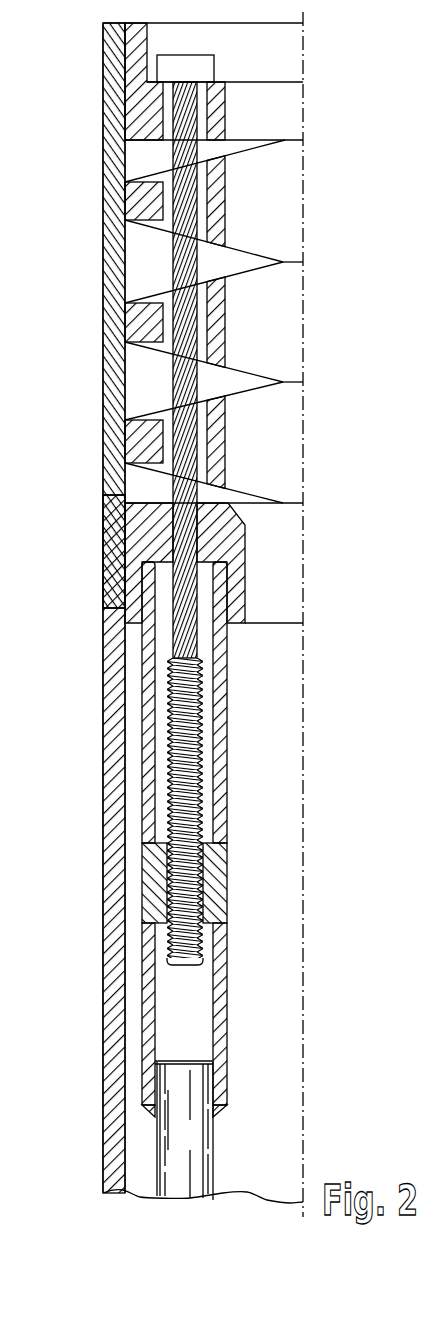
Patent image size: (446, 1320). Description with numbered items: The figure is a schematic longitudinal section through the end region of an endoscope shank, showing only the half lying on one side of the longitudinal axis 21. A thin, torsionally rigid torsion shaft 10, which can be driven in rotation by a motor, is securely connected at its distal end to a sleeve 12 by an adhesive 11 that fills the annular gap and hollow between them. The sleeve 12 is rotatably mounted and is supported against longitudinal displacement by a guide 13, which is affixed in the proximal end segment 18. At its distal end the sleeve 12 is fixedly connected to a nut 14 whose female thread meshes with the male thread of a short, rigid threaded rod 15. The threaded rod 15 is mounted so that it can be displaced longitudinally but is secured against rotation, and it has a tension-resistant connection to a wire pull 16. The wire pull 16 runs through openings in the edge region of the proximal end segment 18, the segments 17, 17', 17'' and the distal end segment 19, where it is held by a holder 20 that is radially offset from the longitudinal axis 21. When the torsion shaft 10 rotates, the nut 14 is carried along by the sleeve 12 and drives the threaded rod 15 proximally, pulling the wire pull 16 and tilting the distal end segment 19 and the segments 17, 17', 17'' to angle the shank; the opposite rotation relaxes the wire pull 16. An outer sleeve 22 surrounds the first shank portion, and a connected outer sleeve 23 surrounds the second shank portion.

The torsion shaft 10 is at (177, 1157).
The adhesive 11 is at (152, 1112).
The sleeve 12 is at (148, 997).
The guide 13 is at (148, 787).
The nut 14 is at (148, 893).
The threaded rod 15 is at (167, 725).
The wire pull 16 is at (188, 382).
The segment 17 is at (164, 442).
The segment 17' is at (174, 322).
The segment 17'' is at (174, 201).
The proximal end segment 18 is at (140, 537).
The distal end segment 19 is at (145, 123).
The holder 20 is at (167, 68).
The longitudinal axis 21 is at (303, 45).
The outer sleeve 22 is at (113, 640).
The outer sleeve 23 is at (112, 488).